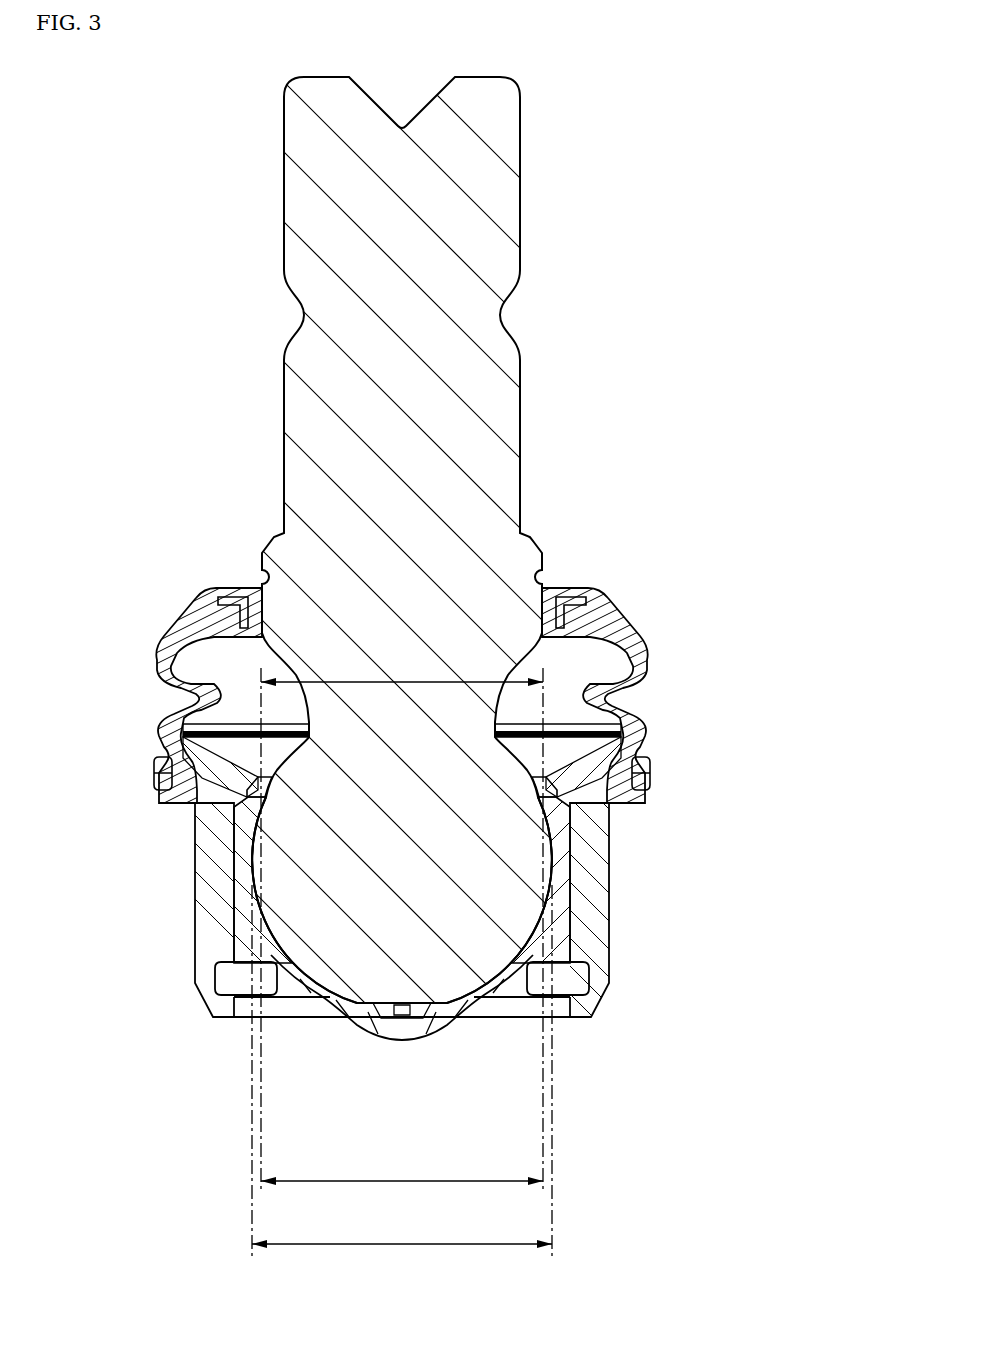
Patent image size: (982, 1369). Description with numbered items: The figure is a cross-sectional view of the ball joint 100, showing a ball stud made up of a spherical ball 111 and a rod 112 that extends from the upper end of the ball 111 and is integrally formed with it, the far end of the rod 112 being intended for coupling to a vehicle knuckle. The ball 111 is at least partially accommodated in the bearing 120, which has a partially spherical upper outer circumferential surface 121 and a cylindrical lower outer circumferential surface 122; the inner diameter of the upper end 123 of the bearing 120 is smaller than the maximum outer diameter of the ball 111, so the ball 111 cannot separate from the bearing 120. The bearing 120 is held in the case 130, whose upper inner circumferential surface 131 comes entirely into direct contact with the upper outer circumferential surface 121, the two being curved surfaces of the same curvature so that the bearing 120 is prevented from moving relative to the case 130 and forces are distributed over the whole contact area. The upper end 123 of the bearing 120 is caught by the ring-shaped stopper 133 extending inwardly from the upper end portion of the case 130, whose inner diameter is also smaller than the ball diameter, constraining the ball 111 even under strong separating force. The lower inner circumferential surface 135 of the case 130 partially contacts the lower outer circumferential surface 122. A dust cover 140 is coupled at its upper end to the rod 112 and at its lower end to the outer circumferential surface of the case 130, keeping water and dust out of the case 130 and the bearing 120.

The ball joint 100 is at (600, 226).
The ball 111 is at (455, 990).
The rod 112 is at (505, 406).
The bearing 120 is at (561, 913).
The upper outer circumferential surface 121 is at (238, 822).
The lower outer circumferential surface 122 is at (214, 915).
The upper end 123 is at (576, 797).
The case 130 is at (598, 847).
The upper inner circumferential surface 131 is at (243, 866).
The stopper 133 is at (566, 770).
The lower inner circumferential surface 135 is at (214, 962).
The dust cover 140 is at (592, 598).